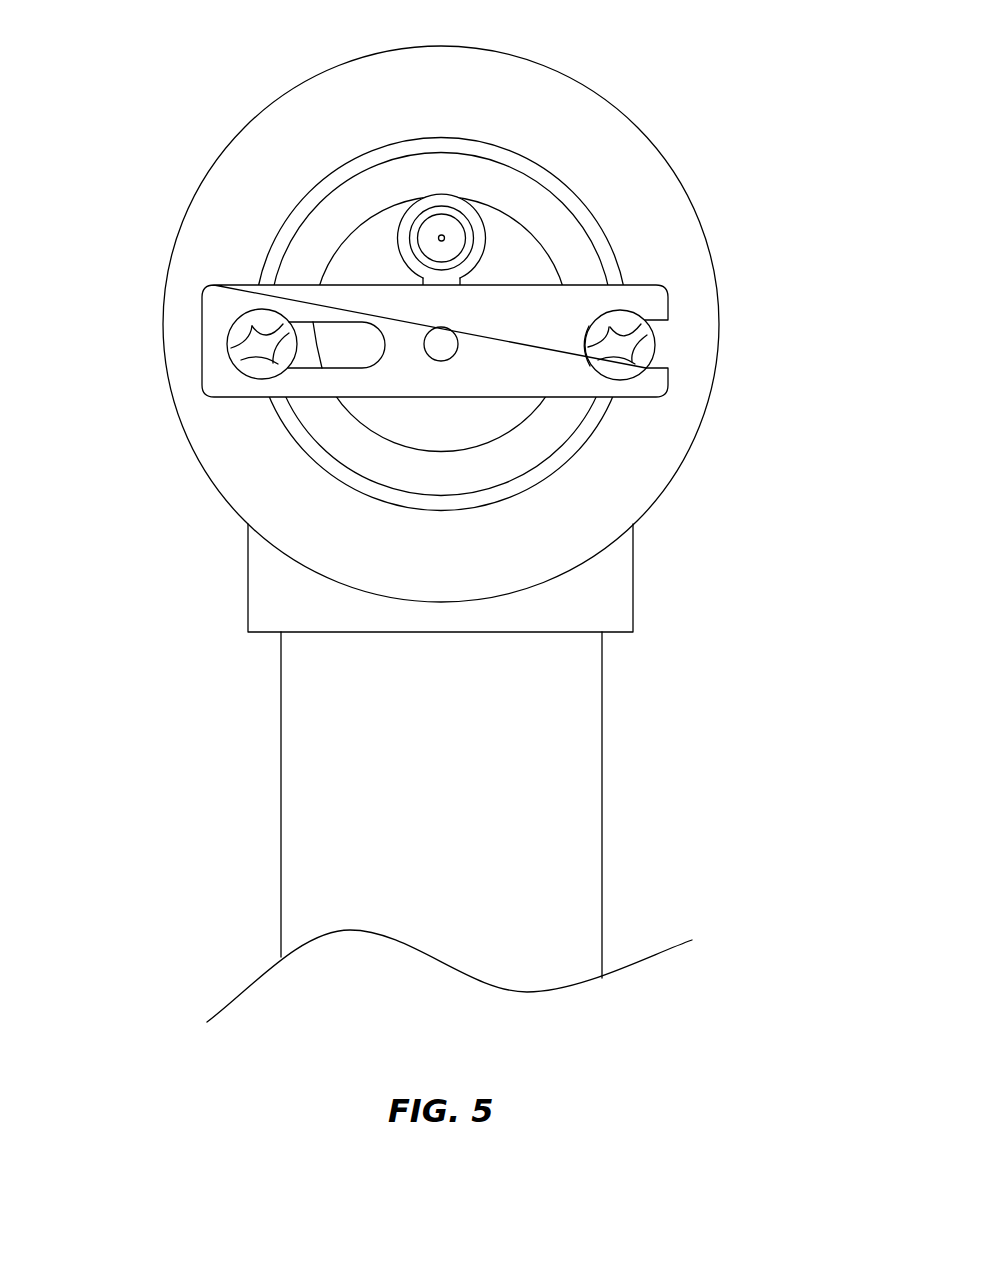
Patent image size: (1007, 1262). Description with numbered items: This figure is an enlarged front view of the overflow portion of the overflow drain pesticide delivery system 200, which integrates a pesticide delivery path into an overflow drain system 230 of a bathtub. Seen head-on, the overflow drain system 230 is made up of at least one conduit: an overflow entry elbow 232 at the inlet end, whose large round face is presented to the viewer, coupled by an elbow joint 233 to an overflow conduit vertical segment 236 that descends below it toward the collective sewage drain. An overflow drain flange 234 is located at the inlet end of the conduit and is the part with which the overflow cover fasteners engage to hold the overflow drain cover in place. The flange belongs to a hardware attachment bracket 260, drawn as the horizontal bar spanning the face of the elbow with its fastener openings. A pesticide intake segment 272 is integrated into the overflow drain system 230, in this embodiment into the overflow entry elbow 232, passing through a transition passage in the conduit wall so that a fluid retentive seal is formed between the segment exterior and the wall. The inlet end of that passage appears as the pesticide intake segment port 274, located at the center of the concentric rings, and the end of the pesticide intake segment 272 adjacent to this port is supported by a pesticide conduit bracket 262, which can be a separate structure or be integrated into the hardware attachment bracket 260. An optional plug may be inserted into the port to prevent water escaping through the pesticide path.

The overflow drain pesticide delivery system 200 is at (160, 78).
The overflow drain system 230 is at (188, 763).
The overflow entry elbow 232 is at (352, 186).
The elbow joint 233 is at (247, 577).
The overflow drain flange 234 is at (196, 454).
The overflow conduit vertical segment 236 is at (281, 807).
The hardware attachment bracket 260 is at (202, 340).
The pesticide conduit bracket 262 is at (482, 239).
The pesticide intake segment 272 is at (462, 220).
The pesticide intake segment port 274 is at (449, 245).